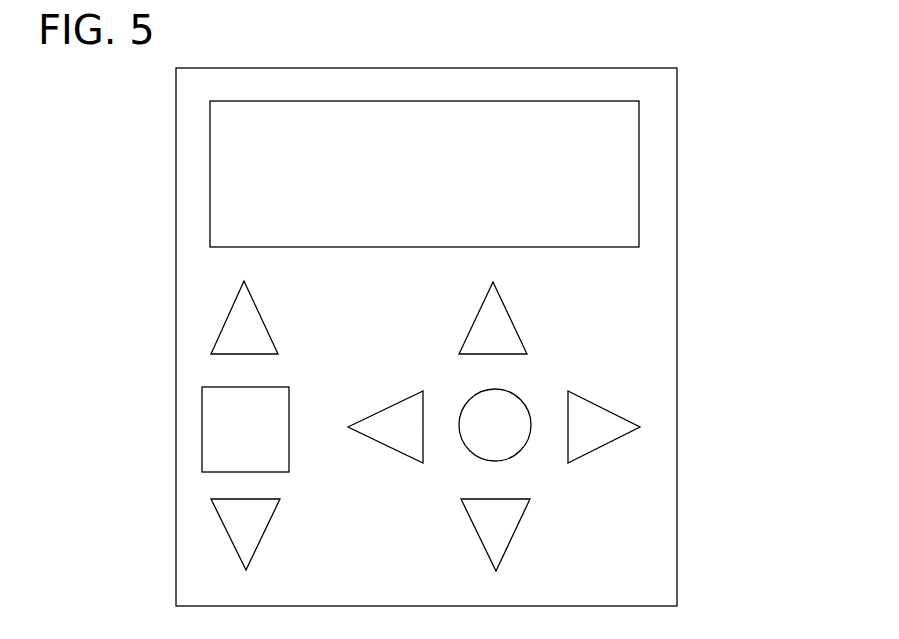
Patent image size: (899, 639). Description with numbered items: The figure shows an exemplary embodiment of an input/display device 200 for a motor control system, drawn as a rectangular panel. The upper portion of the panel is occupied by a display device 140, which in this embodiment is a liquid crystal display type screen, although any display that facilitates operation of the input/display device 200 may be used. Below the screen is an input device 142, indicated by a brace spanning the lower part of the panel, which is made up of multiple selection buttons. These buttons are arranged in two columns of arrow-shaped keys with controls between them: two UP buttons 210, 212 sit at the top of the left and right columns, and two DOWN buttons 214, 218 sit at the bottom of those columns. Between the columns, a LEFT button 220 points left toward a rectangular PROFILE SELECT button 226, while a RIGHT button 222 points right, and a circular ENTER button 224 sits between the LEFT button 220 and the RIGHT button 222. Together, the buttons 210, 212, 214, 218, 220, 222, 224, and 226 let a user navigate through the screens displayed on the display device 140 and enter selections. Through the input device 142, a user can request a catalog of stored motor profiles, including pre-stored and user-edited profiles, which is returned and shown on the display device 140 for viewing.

The input/display device 200 is at (703, 104).
The display device 140 is at (210, 145).
The input device 142 is at (202, 280).
The UP button 210 is at (258, 300).
The UP button 212 is at (507, 300).
The DOWN button 214 is at (265, 533).
The DOWN button 218 is at (517, 534).
The LEFT button 220 is at (385, 407).
The RIGHT button 222 is at (617, 410).
The ENTER button 224 is at (470, 457).
The PROFILE SELECT button 226 is at (289, 388).